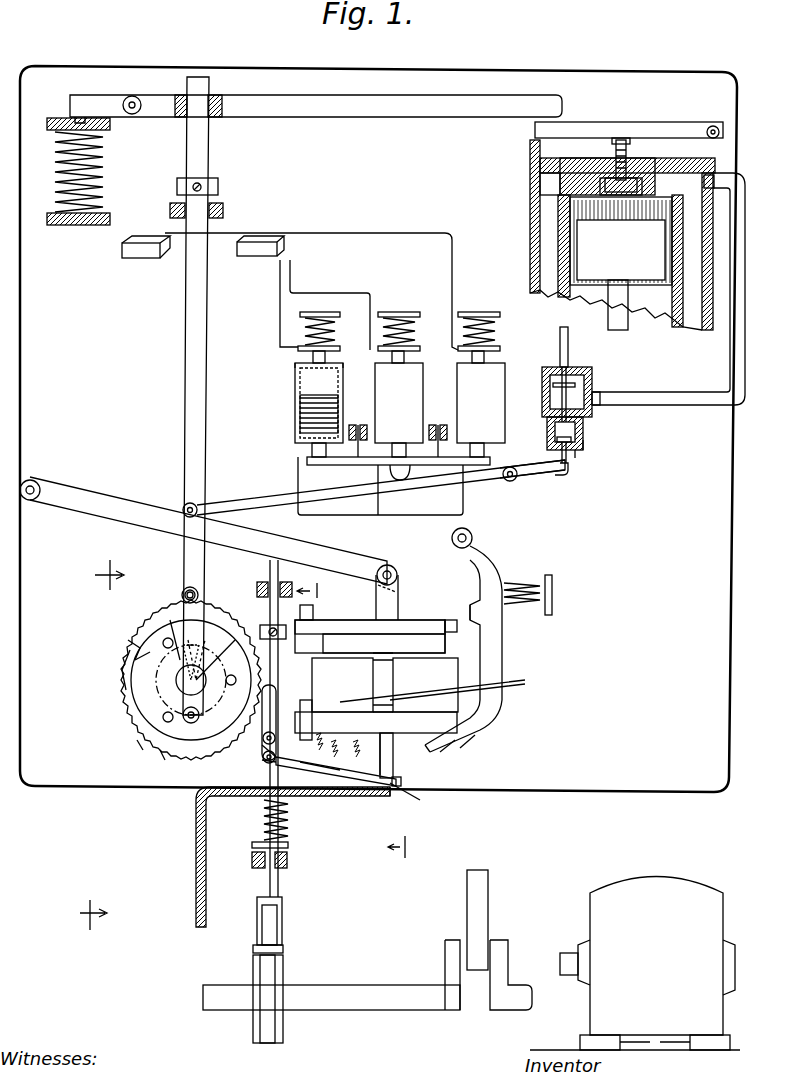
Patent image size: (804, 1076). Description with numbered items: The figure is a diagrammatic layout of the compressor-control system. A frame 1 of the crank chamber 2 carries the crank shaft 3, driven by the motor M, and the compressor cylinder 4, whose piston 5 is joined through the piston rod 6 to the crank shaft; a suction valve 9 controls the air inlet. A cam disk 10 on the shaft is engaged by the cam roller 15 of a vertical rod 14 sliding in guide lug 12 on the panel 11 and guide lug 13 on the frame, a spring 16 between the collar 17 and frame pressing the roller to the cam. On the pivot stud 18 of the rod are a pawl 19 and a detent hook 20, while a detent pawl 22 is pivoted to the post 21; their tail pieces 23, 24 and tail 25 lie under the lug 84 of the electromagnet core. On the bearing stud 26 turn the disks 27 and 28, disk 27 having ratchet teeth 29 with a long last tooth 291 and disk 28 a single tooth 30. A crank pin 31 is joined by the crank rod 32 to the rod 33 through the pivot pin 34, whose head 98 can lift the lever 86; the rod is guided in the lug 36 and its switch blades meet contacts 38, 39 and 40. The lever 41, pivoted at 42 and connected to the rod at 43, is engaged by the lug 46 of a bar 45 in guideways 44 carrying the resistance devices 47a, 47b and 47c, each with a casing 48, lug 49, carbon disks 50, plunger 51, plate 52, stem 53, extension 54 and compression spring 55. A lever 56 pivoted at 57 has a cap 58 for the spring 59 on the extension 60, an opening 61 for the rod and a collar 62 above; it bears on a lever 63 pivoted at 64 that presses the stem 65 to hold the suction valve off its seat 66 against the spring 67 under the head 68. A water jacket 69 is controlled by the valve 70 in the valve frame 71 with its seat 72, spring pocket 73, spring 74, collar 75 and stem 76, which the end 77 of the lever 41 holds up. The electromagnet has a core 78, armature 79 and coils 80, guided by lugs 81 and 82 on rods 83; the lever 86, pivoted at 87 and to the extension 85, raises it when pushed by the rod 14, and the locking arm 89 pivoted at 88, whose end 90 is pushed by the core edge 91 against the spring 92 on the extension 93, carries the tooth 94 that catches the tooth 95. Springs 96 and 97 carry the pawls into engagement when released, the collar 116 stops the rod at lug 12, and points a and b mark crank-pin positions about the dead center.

The frame 1 is at (196, 915).
The crank chamber 2 is at (156, 744).
The crank shaft 3 is at (402, 975).
The compressor cylinder 4 is at (530, 215).
The piston 5 is at (575, 272).
The piston rod 6 is at (630, 330).
The suction valve 9 is at (713, 117).
The cam disk 10 is at (275, 985).
The panel 11 is at (700, 790).
The guide lug 12 is at (258, 584).
The guide lug 13 is at (287, 860).
The vertical rod 14 is at (278, 882).
The cam roller 15 is at (282, 928).
The spring 16 is at (288, 826).
The collar 17 is at (252, 845).
The pivot stud 18 is at (262, 762).
The pawl 19 is at (262, 762).
The detent hook 20 is at (358, 690).
The post 21 is at (276, 760).
The detent pawl 22 is at (272, 692).
The tail piece 23 is at (395, 790).
The tail piece 24 is at (320, 770).
The tail 25 is at (401, 779).
The bearing stud 26 is at (176, 690).
The disk 27 is at (145, 738).
The disk 28 is at (135, 672).
The ratchet teeth 29 is at (162, 748).
The last tooth 291 is at (125, 670).
The tooth 30 is at (135, 640).
The crank pin 31 is at (191, 723).
The crank rod 32 is at (204, 662).
The rod 33 is at (190, 272).
The pivot pin 34 is at (183, 590).
The lug 36 is at (170, 210).
The contact 38 is at (128, 258).
The contact 39 is at (245, 256).
The contact 40 is at (278, 240).
The lever 41 is at (500, 482).
The pivot 42 is at (522, 476).
The connection 43 is at (182, 508).
The guideways 44 is at (358, 425).
The bar 45 is at (340, 465).
The lug 46 is at (400, 480).
The resistance device 47a is at (319, 403).
The resistance device 47b is at (399, 384).
The resistance device 47c is at (481, 384).
The cylindrical casing 48 is at (298, 404).
The lug 49 is at (312, 450).
The carbon disks 50 is at (298, 422).
The plunger 51 is at (295, 366).
The plate 52 is at (340, 349).
The stem 53 is at (343, 368).
The extension 54 is at (318, 312).
The compression spring 55 is at (335, 330).
The lever 56 is at (272, 117).
The pivot 57 is at (138, 112).
The cap 58 is at (75, 108).
The compression spring 59 is at (103, 170).
The extension 60 is at (60, 225).
The opening 61 is at (222, 95).
The collar 62 is at (220, 186).
The lever 63 is at (562, 122).
The pivot 64 is at (710, 178).
The valve stem 65 is at (605, 178).
The seat 66 is at (530, 160).
The compression spring 67 is at (622, 140).
The head 68 is at (618, 138).
The water jacket 69 is at (545, 258).
The valve 70 is at (592, 413).
The valve frame 71 is at (542, 380).
The seat 72 is at (592, 375).
The spring pocket 73 is at (583, 445).
The compression spring 74 is at (575, 440).
The collar 75 is at (576, 452).
The valve stem 76 is at (550, 423).
The lever end 77 is at (565, 478).
The core 78 is at (470, 735).
The armature 79 is at (422, 622).
The energizing coils 80 is at (442, 687).
The guide lug 81 is at (325, 722).
The guide lug 82 is at (310, 622).
The guide rods 83 is at (325, 642).
The lug 84 is at (395, 786).
The extension 85 is at (398, 590).
The lever 86 is at (320, 555).
The pivot 87 is at (40, 484).
The pivot 88 is at (472, 538).
The locking arm 89 is at (495, 645).
The end 90 is at (435, 750).
The lower edge 91 is at (445, 745).
The spring 92 is at (522, 580).
The extension 93 is at (552, 598).
The locking tooth 94 is at (482, 624).
The locking tooth 95 is at (452, 620).
The spring 96 is at (440, 757).
The spring 97 is at (320, 760).
The head 98 is at (196, 592).
The collar 116 is at (262, 625).
The point a is at (217, 641).
The point b is at (167, 621).
The motor M is at (635, 949).